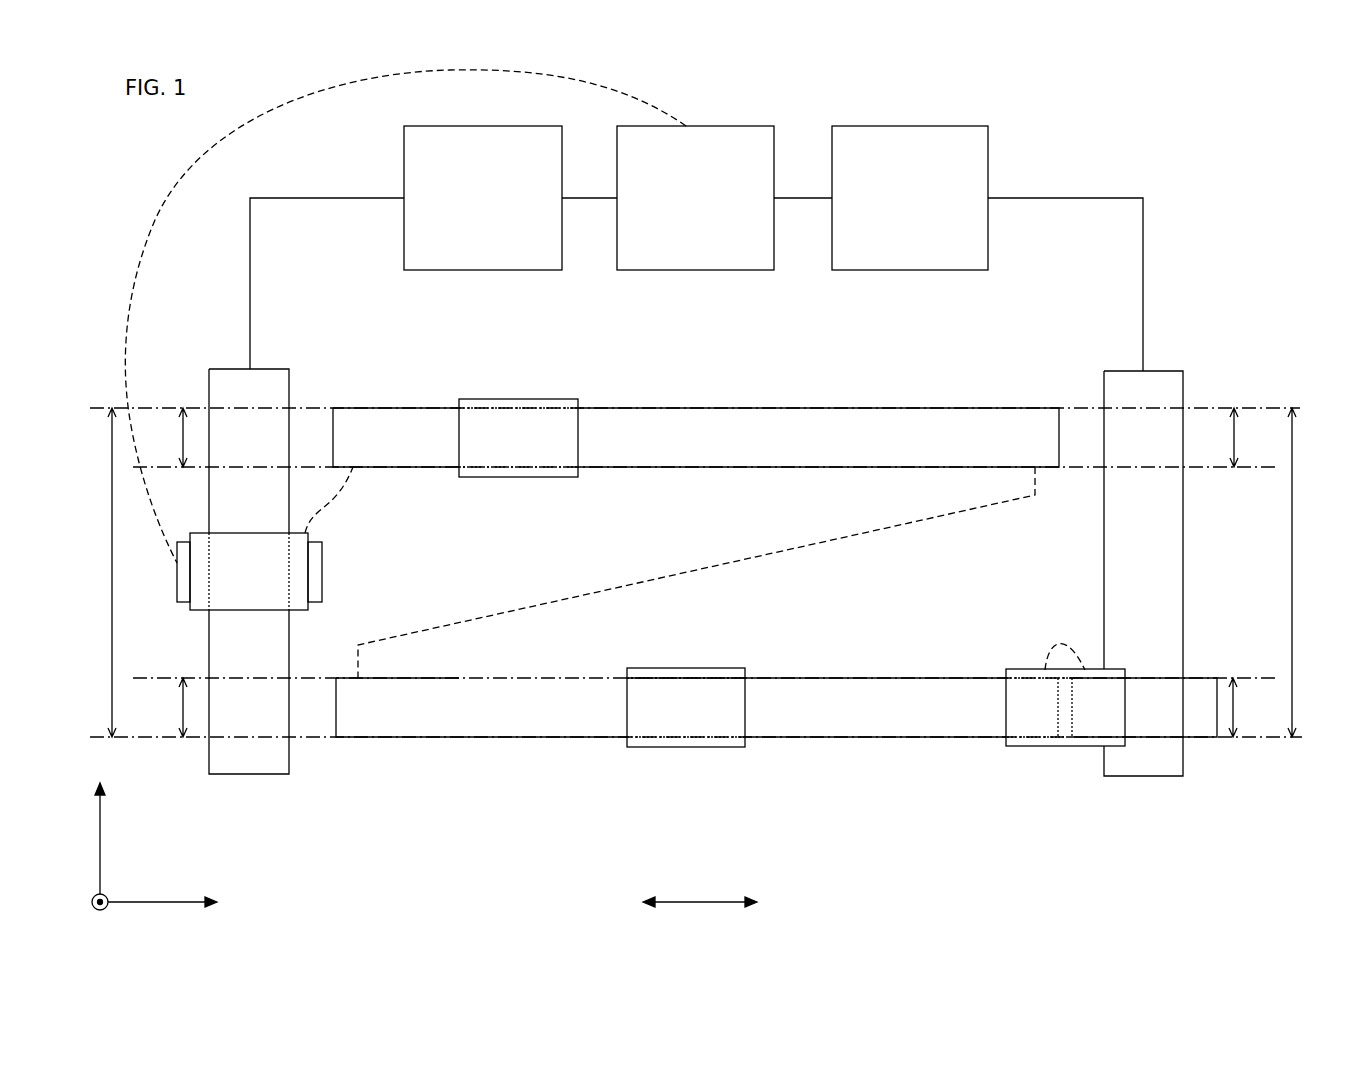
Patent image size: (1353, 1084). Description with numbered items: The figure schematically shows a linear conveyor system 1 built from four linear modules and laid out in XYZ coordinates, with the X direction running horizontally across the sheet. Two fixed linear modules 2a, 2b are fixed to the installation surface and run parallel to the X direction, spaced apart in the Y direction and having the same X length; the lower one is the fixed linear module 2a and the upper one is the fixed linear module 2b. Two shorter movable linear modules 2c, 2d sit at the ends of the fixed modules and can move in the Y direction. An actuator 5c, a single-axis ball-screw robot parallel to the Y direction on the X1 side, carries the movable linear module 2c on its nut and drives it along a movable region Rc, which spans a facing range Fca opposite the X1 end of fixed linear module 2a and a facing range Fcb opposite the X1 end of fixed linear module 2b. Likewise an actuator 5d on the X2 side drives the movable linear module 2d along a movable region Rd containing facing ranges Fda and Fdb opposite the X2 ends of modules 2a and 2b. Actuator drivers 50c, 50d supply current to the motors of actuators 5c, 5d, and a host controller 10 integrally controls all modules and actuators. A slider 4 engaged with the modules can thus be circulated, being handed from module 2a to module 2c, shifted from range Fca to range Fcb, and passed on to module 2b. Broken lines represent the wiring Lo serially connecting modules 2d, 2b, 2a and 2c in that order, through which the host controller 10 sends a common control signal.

The linear conveyor system 1 is at (1243, 127).
The host controller 10 is at (695, 270).
The actuator driver 50c is at (912, 270).
The actuator driver 50d is at (486, 270).
The actuator 5c is at (1120, 577).
The actuator 5d is at (270, 385).
The slider 4 is at (230, 552).
The fixed linear module 2a is at (855, 722).
The fixed linear module 2b is at (743, 453).
The movable linear module 2c is at (1193, 728).
The movable linear module 2d is at (317, 570).
The wiring Lo is at (607, 374).
The movable region Rd is at (97, 572).
The movable region Rc is at (1304, 572).
The facing range Fdb is at (164, 437).
The facing range Fda is at (164, 707).
The facing range Fcb is at (1250, 437).
The facing range Fca is at (1250, 707).